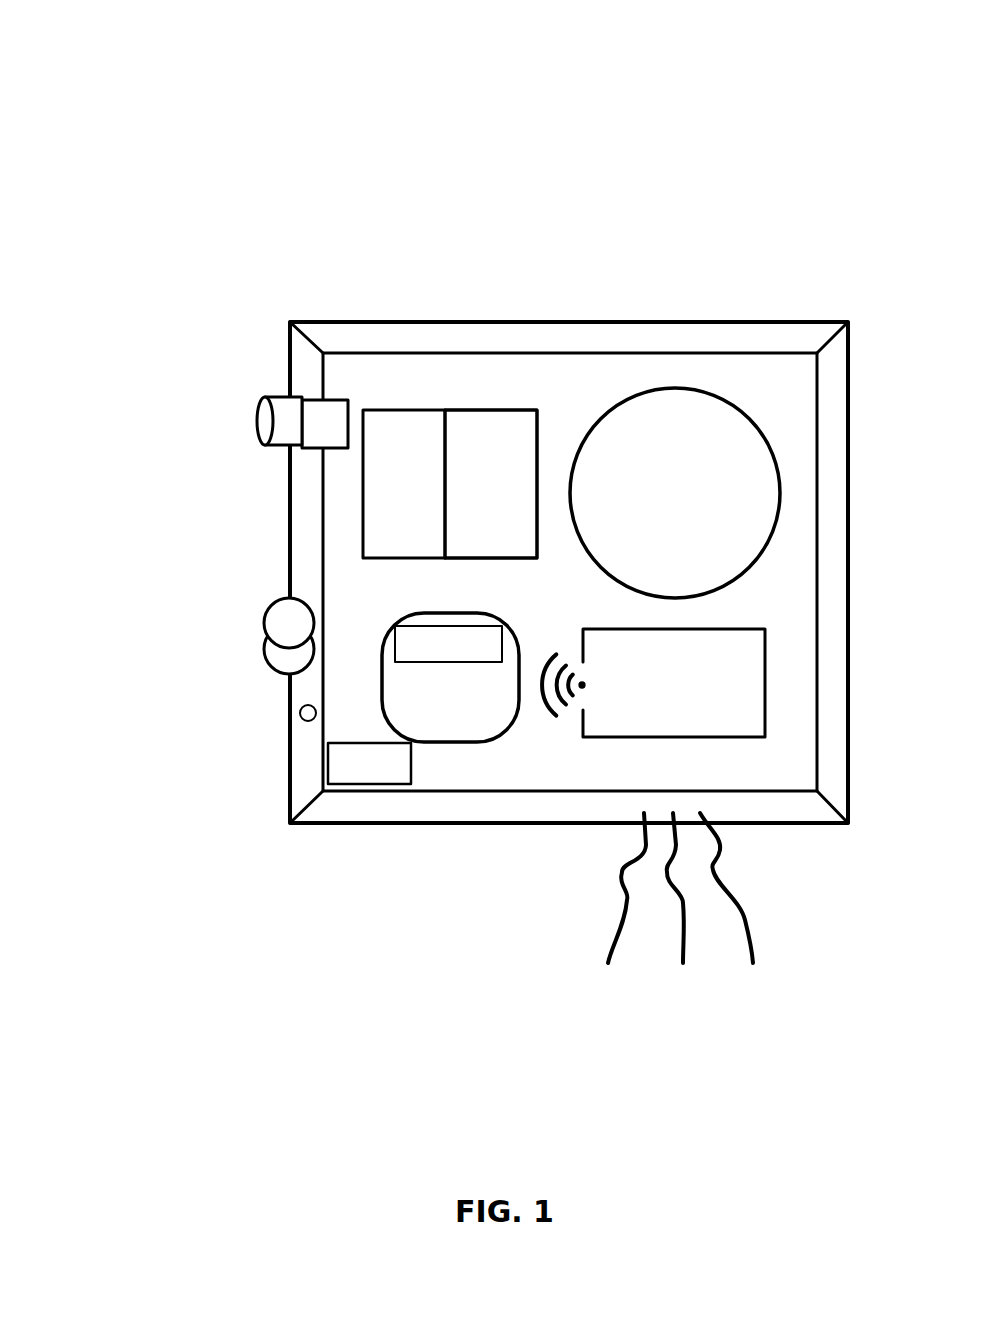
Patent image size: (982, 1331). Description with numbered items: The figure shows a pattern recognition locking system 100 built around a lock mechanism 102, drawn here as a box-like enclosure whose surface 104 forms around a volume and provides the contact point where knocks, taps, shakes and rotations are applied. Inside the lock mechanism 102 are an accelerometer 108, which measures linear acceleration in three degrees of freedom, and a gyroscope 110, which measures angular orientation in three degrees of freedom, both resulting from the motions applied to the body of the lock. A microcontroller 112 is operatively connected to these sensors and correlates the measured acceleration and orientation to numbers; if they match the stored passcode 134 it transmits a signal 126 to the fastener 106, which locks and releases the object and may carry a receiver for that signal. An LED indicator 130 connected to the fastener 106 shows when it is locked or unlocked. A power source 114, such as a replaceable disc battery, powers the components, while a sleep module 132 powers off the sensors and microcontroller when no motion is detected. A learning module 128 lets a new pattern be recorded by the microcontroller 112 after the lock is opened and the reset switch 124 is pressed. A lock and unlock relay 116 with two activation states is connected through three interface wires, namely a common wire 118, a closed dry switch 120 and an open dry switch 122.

The pattern recognition locking system 100 is at (118, 99).
The lock mechanism 102 is at (619, 570).
The surface 104 is at (590, 343).
The fastener 106 is at (265, 627).
The accelerometer 108 is at (418, 493).
The gyroscope 110 is at (500, 493).
The microcontroller 112 is at (468, 691).
The power source 114 is at (689, 513).
The lock and unlock relay 116 is at (696, 692).
The common wire 118 is at (677, 967).
The closed dry switch 120 is at (605, 950).
The open dry switch 122 is at (757, 952).
The reset switch 124 is at (258, 410).
The signal 126 is at (538, 712).
The learning module 128 is at (337, 401).
The LED indicator 130 is at (300, 721).
The sleep module 132 is at (386, 774).
The passcode 134 is at (441, 623).